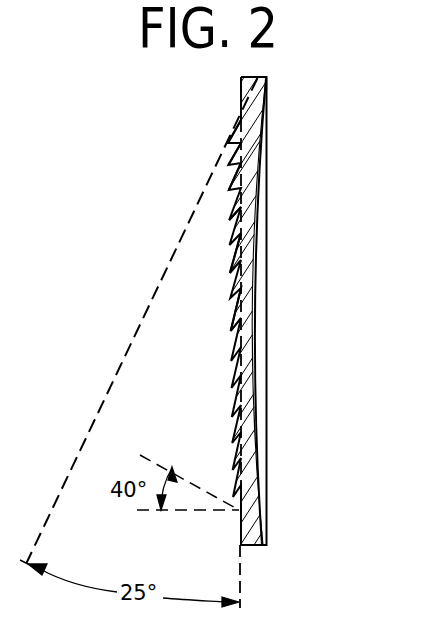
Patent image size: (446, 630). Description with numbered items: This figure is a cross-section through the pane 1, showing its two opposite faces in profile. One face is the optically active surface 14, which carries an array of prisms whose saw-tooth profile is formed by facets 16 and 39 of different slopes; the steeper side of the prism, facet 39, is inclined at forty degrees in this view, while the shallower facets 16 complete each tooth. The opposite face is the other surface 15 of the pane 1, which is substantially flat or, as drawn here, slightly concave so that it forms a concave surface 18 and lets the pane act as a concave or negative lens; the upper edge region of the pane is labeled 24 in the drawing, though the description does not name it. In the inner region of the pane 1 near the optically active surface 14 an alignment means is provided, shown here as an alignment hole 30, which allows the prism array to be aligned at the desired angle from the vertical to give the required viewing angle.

The pane 1 is at (236, 320).
The optically active surface 14 is at (237, 293).
The other surface 15 is at (267, 223).
The facets 16 is at (238, 199).
The concave surface 18 is at (255, 362).
The top edge 24 is at (266, 90).
The alignment hole 30 is at (262, 486).
The facets 39 is at (237, 224).